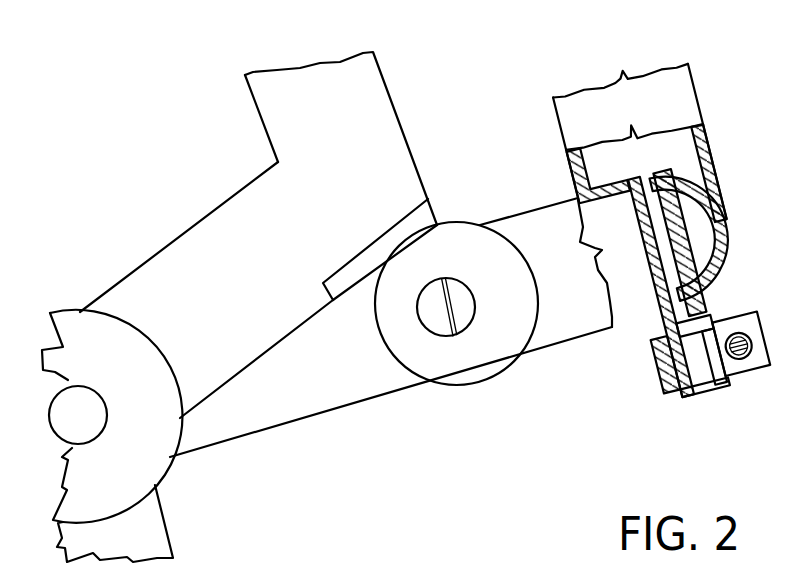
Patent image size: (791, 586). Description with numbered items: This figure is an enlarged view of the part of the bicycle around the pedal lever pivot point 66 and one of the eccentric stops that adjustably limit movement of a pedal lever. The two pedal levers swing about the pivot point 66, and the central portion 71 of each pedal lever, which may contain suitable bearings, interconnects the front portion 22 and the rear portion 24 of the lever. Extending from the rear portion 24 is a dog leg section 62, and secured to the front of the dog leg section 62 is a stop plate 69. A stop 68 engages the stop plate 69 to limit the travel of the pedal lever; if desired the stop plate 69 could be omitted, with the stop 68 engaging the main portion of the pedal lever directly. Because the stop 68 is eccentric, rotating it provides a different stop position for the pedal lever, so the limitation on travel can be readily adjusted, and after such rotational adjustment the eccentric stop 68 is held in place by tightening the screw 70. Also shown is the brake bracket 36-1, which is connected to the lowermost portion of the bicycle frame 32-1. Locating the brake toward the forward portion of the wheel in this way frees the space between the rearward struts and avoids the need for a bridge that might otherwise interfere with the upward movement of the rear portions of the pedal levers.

The front portion 22 is at (128, 529).
The rear portion 24 is at (368, 117).
The bicycle frame 32-1 is at (623, 118).
The brake bracket 36-1 is at (755, 358).
The dog leg section 62 is at (159, 275).
The pivot point 66 is at (86, 405).
The eccentric stop 68 is at (482, 360).
The stop plate 69 is at (422, 220).
The screw 70 is at (442, 310).
The central portion 71 is at (147, 443).